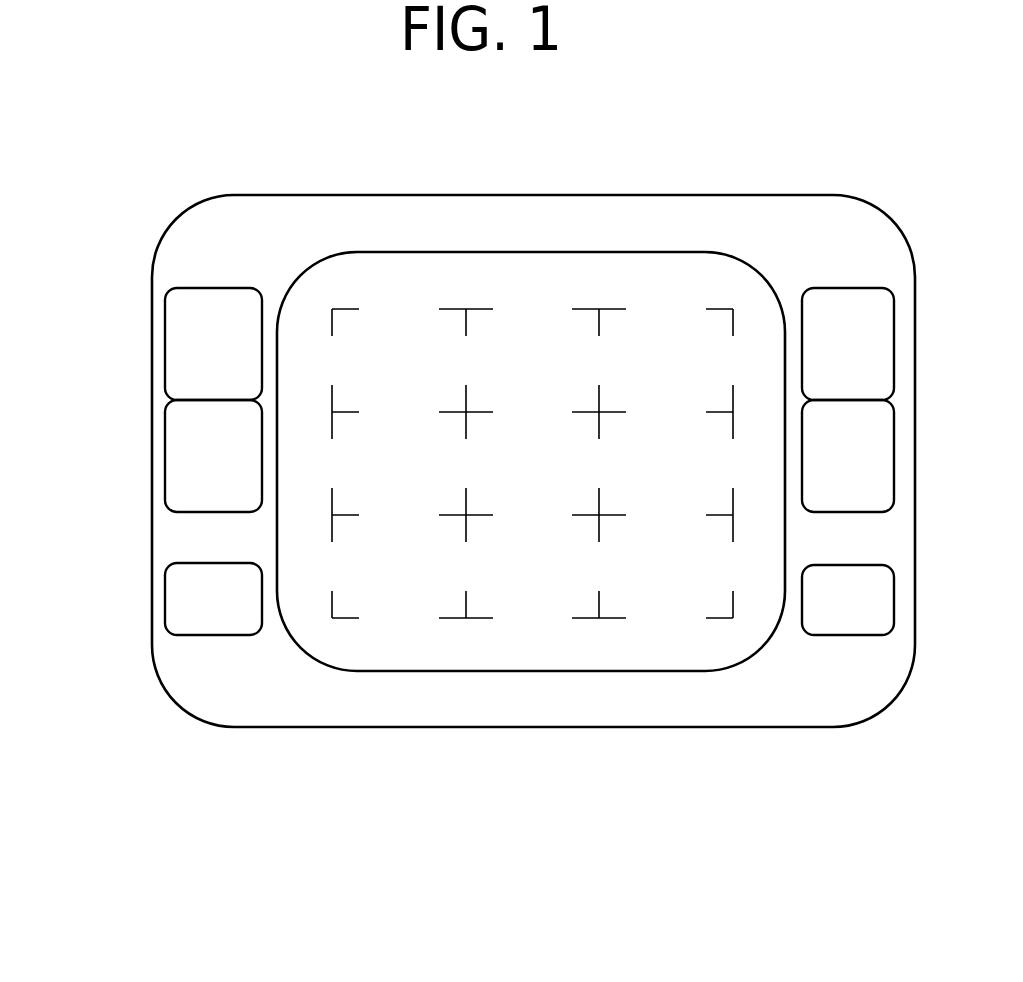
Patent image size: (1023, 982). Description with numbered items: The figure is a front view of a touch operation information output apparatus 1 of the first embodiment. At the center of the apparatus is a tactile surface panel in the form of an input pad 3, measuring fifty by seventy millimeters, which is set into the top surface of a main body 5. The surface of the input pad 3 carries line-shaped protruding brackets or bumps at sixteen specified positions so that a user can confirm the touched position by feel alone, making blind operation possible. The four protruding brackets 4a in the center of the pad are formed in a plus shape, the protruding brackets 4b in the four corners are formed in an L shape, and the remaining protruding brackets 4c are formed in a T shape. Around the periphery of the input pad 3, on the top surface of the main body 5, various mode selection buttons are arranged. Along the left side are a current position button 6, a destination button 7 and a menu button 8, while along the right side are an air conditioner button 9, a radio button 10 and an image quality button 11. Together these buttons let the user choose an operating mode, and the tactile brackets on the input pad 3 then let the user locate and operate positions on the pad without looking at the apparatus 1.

The touch operation information output apparatus 1 is at (914, 202).
The input pad 3 is at (483, 278).
The protruding brackets 4a is at (462, 527).
The protruding brackets 4b is at (717, 622).
The protruding brackets 4c is at (593, 620).
The main body 5 is at (700, 196).
The current position button 6 is at (165, 333).
The destination button 7 is at (165, 435).
The menu button 8 is at (165, 605).
The air conditioner button 9 is at (893, 355).
The radio button 10 is at (893, 467).
The image quality button 11 is at (895, 605).